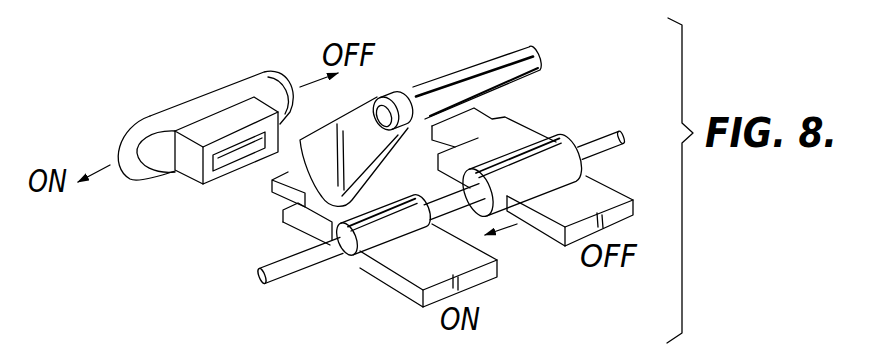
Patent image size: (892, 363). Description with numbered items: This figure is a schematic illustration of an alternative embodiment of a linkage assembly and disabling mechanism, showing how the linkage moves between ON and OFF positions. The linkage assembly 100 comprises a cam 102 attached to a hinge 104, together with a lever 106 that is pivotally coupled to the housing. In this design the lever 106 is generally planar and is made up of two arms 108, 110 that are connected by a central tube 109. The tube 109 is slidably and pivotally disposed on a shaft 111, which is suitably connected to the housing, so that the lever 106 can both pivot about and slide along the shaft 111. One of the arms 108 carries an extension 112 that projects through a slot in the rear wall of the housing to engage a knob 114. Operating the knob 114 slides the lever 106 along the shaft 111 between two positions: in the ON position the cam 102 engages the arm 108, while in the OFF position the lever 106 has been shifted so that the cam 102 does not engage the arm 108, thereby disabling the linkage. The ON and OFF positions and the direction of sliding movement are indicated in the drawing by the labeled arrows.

The switch assembly 100 is at (165, 280).
The pivoting lever 102 is at (360, 130).
The pivot pin 104 is at (539, 63).
The slide block (OFF position) 106 is at (553, 232).
The base frame 108 is at (285, 226).
The bushing and shaft 109 is at (338, 263).
The slide block (ON position) 110 is at (428, 257).
The shaft end 111 is at (607, 128).
The stop lug 112 is at (280, 174).
The cap 114 is at (160, 111).